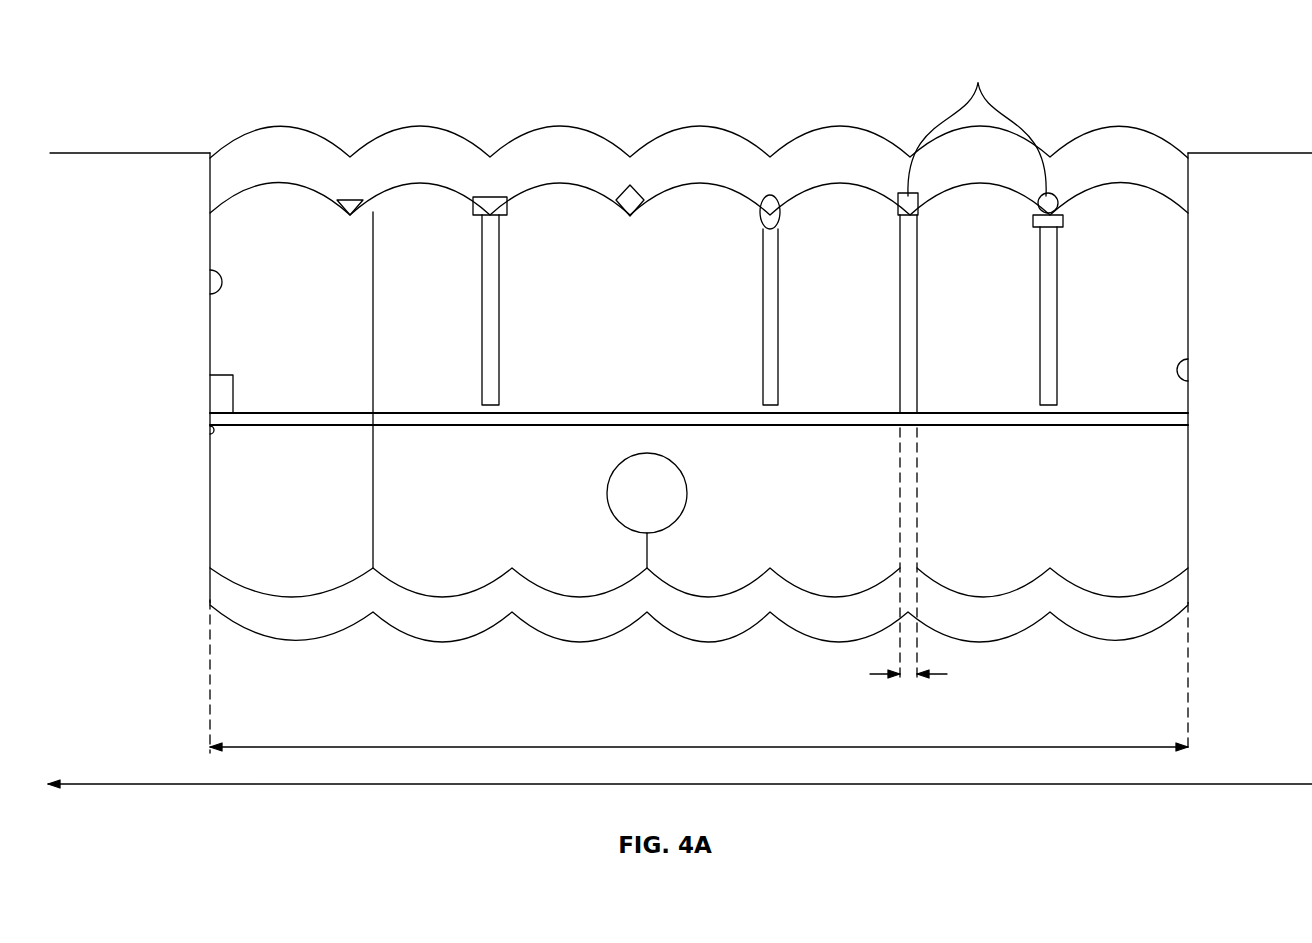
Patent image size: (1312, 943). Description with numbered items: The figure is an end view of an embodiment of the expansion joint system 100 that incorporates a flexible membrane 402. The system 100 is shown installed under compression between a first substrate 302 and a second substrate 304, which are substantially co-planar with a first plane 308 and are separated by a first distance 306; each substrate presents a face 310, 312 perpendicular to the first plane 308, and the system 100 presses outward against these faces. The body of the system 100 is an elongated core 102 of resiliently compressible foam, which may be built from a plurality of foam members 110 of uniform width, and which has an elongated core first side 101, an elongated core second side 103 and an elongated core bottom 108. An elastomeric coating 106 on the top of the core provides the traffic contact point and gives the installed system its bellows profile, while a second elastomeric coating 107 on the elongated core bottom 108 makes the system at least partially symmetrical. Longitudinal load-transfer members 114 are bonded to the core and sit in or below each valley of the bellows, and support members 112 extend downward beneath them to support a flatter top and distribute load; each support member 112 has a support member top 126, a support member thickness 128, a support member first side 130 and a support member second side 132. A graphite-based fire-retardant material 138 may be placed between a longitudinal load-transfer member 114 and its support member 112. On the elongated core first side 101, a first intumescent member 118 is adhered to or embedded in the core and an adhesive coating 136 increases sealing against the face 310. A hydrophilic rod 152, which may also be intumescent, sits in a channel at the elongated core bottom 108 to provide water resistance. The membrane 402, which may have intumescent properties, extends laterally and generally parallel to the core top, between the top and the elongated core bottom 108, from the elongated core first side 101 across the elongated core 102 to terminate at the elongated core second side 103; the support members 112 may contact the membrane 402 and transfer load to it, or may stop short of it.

The expansion joint system 100 is at (161, 63).
The elongated core first side 101 is at (210, 545).
The elongated core 102 is at (1173, 272).
The elongated core second side 103 is at (1188, 503).
The elastomeric coating 106 is at (697, 143).
The elastomeric coating 107 is at (580, 618).
The elongated core bottom 108 is at (1107, 598).
The foam member 110 is at (288, 578).
The support member 112 is at (488, 320).
The longitudinal load-transfer member 114 is at (350, 205).
The first intumescent member 118 is at (220, 390).
The support member top 126 is at (917, 216).
The support member thickness 128 is at (880, 674).
The support member first side 130 is at (898, 375).
The support member second side 132 is at (917, 363).
The adhesive coating 136 is at (218, 432).
The graphite-based fire-retardant material 138 is at (1063, 222).
The hydrophilic rod 152 is at (613, 470).
The first substrate 302 is at (133, 153).
The second substrate 304 is at (1226, 153).
The first distance 306 is at (698, 747).
The first plane 308 is at (698, 784).
The face 310 is at (210, 292).
The face 312 is at (1190, 380).
The flexible membrane 402 is at (1127, 425).